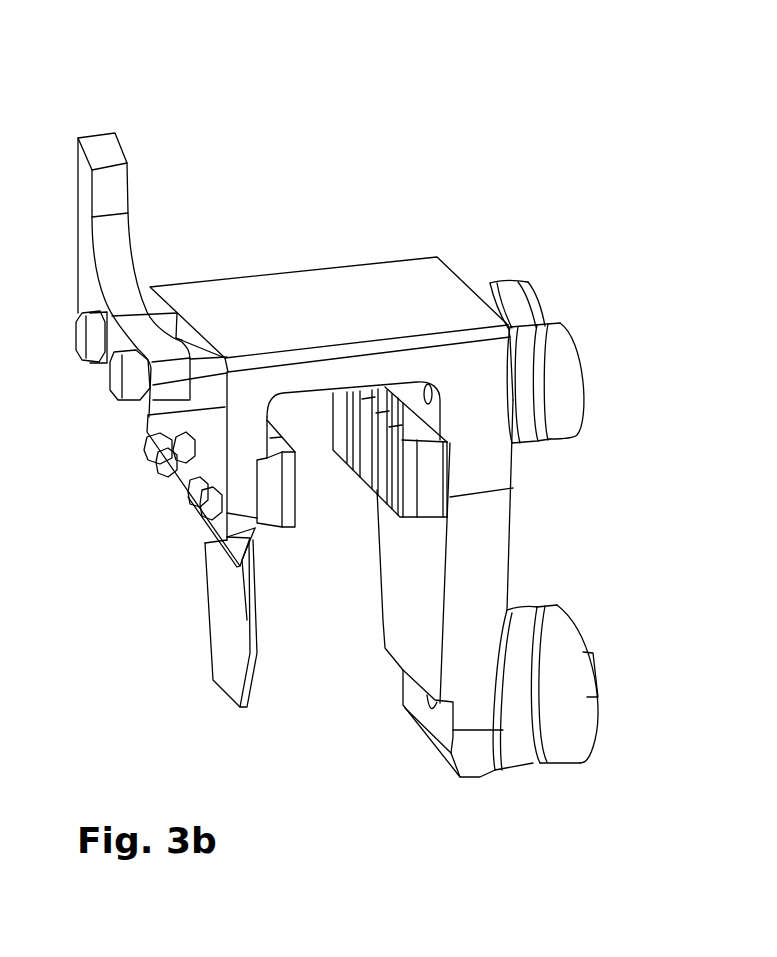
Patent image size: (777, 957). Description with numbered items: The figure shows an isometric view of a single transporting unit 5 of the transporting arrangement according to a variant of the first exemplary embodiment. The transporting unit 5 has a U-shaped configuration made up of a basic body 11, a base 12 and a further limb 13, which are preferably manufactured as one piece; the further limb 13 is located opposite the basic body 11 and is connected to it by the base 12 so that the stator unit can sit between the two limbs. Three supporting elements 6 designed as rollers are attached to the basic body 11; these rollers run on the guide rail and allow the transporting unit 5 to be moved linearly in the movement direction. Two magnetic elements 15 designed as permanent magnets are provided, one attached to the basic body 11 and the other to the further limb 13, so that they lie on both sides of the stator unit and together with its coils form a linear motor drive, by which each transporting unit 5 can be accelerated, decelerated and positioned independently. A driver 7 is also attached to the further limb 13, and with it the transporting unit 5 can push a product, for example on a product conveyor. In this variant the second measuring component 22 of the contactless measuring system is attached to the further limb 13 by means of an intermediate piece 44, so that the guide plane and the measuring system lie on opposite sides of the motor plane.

The transporting unit 5 is at (430, 148).
The supporting element 6 is at (515, 287).
The driver 7 is at (118, 189).
The basic body 11 is at (495, 527).
The base 12 is at (305, 284).
The further limb 13 is at (243, 442).
The magnetic element 15 is at (380, 473).
The second measuring component 22 is at (222, 625).
The intermediate piece 44 is at (232, 550).